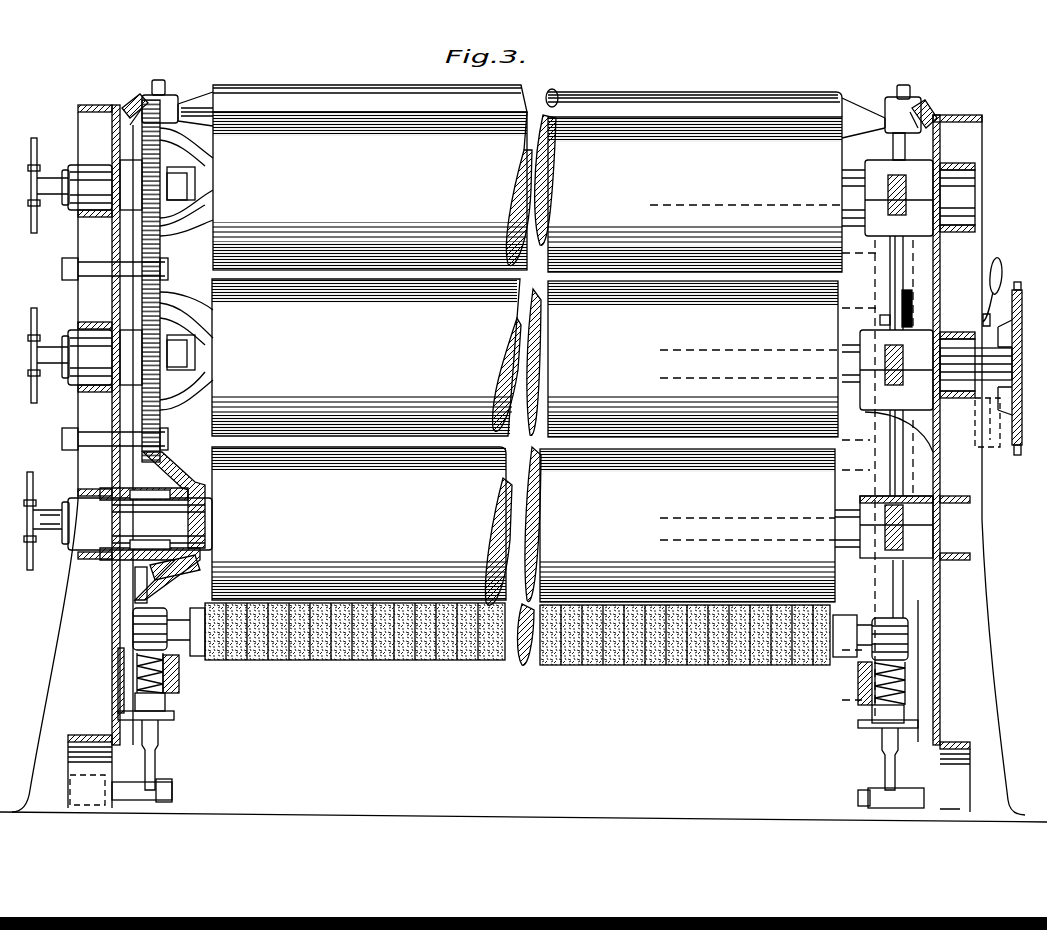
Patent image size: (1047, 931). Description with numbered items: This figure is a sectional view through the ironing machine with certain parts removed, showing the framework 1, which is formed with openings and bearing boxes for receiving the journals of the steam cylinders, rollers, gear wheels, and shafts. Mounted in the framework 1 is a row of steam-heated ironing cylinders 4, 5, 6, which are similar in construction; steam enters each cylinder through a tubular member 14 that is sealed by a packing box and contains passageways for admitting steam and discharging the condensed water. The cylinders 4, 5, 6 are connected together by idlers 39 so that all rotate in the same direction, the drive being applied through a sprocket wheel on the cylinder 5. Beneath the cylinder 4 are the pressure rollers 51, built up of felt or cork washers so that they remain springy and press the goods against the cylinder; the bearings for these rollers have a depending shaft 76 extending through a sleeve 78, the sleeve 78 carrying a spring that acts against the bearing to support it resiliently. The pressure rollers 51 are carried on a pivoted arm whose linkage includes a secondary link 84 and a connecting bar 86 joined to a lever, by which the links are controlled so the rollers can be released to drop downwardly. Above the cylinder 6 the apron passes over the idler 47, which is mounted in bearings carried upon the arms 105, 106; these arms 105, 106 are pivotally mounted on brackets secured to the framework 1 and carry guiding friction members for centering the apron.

The framework 1 is at (56, 677).
The cylinder 4 is at (523, 524).
The cylinder 5 is at (525, 358).
The cylinder 6 is at (527, 178).
The tubular member 14 is at (178, 518).
The idlers 39 is at (166, 274).
The idler 47 is at (648, 104).
The pressure rollers 51 is at (397, 640).
The depending shaft 76 is at (176, 702).
The sleeve 78 is at (135, 630).
The secondary link 84 is at (150, 760).
The connecting bar 86 is at (120, 684).
The arm 105 is at (135, 110).
The arm 106 is at (921, 123).